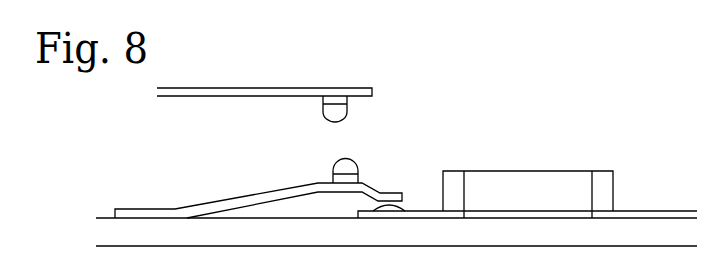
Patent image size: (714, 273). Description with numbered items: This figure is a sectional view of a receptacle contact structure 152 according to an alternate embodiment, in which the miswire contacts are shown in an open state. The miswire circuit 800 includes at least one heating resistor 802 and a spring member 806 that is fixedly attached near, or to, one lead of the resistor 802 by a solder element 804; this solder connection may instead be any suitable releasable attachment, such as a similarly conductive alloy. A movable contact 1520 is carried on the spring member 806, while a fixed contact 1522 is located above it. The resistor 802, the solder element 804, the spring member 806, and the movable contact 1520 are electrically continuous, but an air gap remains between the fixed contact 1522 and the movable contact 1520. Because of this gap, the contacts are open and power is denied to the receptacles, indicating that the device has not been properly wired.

The miswire circuit 800 is at (536, 82).
The receptacle contact structure 152 is at (330, 74).
The fixed contact 1522 is at (347, 105).
The spring member 806 is at (233, 197).
The movable contact 1520 is at (333, 166).
The solder element 804 is at (405, 206).
The heating resistor 802 is at (518, 170).